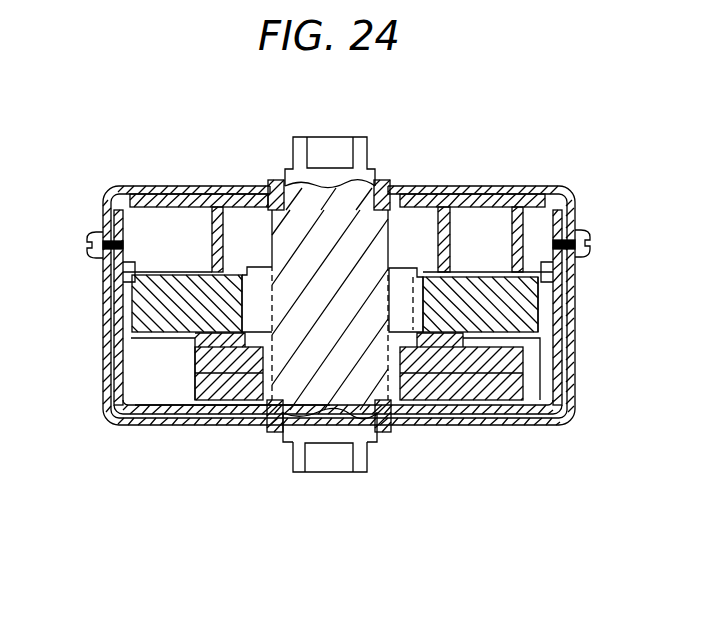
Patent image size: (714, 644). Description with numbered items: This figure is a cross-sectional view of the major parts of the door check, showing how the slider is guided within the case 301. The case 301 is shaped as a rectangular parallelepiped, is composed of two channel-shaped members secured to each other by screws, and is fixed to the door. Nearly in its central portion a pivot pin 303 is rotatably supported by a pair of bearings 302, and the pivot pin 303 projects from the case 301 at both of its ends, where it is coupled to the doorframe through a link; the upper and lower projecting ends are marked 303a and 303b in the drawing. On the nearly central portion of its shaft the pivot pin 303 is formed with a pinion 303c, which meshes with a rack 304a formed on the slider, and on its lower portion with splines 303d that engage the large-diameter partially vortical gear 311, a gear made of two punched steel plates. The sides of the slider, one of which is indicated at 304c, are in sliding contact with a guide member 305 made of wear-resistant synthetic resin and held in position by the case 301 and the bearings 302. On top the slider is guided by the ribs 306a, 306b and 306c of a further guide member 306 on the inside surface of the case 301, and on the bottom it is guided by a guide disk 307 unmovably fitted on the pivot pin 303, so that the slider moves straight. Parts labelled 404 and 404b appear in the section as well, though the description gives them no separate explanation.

The case 301 is at (502, 187).
The bearings 302 is at (380, 181).
The pivot pin 303 is at (290, 172).
The upper shaft end 303a is at (328, 145).
The lower bearing flange 303b is at (363, 460).
The pinion 303c is at (403, 270).
The splines 303d is at (227, 410).
The rack 304a is at (332, 445).
The side wall 304c is at (137, 310).
The guide member 305 is at (467, 418).
The guide member 306 is at (190, 200).
The rib 306a is at (527, 223).
The rib 306b is at (473, 245).
The rib 306c is at (205, 243).
The guide disk 307 is at (190, 347).
The partially vortical gear 311 is at (520, 393).
The rotor magnet 404 is at (537, 313).
The magnet outer surface 404b is at (537, 288).